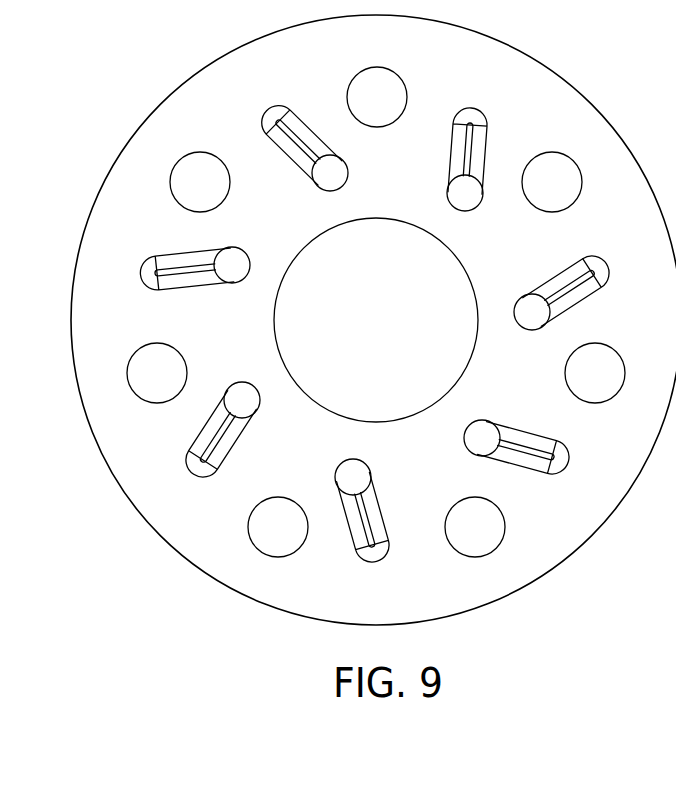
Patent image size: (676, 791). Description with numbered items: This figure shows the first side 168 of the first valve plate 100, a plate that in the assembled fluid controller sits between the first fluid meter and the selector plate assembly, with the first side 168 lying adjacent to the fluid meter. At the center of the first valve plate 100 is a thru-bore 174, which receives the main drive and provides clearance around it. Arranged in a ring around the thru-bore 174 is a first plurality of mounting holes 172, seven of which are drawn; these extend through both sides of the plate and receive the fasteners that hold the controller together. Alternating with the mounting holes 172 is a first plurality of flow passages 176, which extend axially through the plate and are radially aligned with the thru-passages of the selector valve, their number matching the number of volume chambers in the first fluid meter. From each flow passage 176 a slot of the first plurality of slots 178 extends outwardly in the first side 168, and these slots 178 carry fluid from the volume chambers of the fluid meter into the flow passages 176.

The first valve plate 100 is at (596, 76).
The first side 168 is at (474, 82).
The first plurality of mounting holes 172 is at (497, 548).
The thru-bore 174 is at (305, 248).
The first plurality of flow passages 176 is at (517, 305).
The first plurality of slots 178 is at (569, 263).